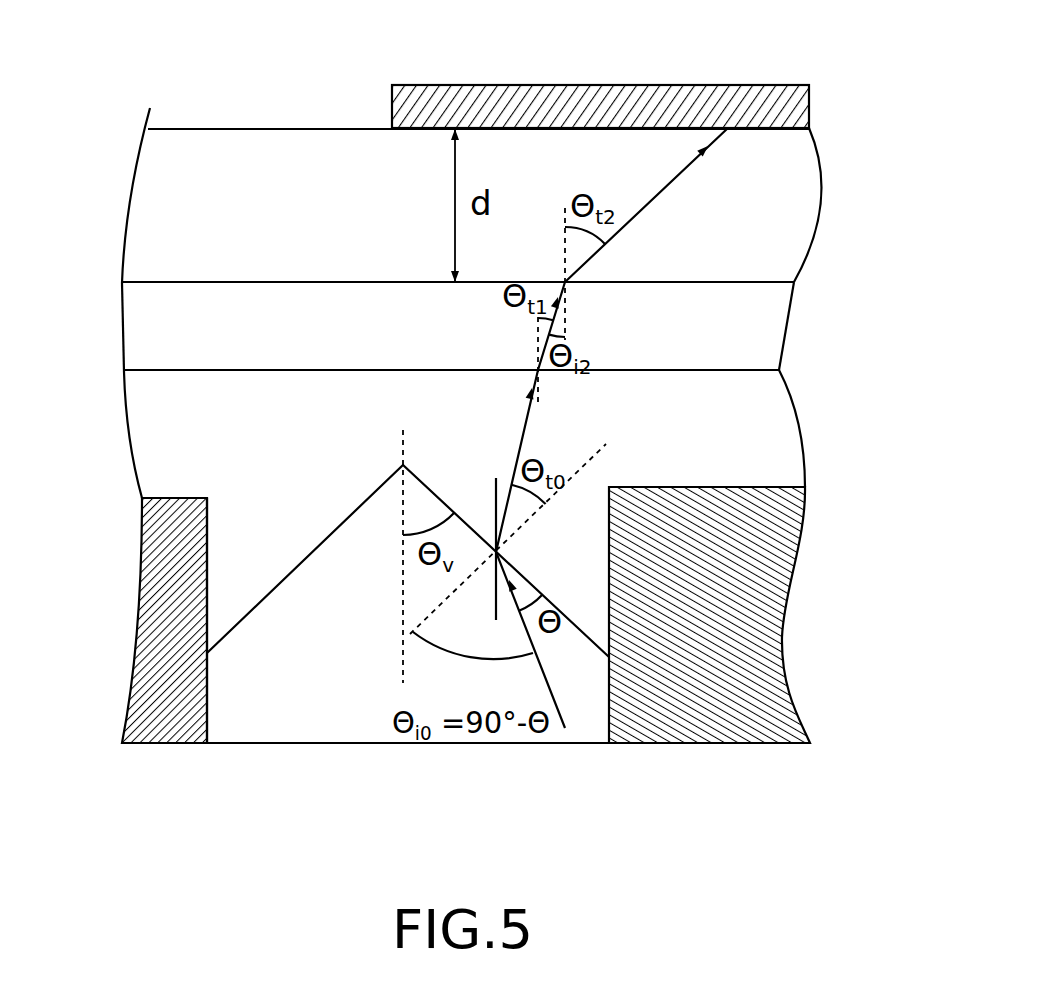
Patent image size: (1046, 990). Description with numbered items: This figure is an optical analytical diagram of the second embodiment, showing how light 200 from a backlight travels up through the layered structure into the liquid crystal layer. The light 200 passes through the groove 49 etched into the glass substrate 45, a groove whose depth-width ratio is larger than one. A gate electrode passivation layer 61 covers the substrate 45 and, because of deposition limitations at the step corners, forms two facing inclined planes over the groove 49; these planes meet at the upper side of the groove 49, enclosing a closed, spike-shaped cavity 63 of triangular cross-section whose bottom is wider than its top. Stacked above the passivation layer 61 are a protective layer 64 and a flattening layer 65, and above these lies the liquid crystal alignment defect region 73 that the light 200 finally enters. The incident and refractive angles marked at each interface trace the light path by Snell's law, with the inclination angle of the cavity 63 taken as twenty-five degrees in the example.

The liquid crystal alignment defect region 73 is at (640, 85).
The flattening layer 65 is at (787, 203).
The protective layer 64 is at (767, 325).
The gate electrode passivation layer 61 is at (773, 448).
The glass substrate 45 is at (160, 575).
The groove 49 is at (207, 702).
The cavity 63 is at (408, 615).
The light 200 is at (565, 715).